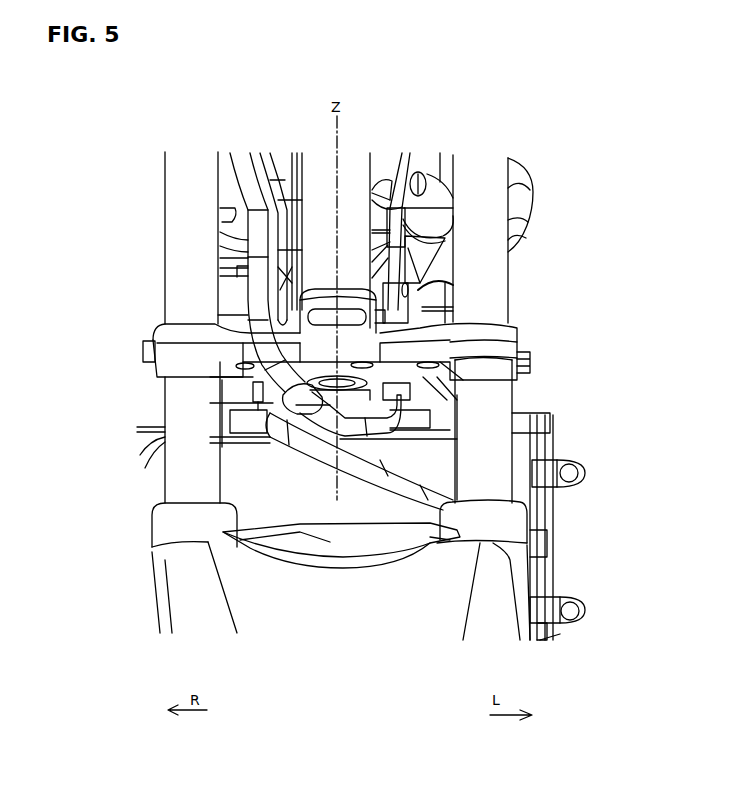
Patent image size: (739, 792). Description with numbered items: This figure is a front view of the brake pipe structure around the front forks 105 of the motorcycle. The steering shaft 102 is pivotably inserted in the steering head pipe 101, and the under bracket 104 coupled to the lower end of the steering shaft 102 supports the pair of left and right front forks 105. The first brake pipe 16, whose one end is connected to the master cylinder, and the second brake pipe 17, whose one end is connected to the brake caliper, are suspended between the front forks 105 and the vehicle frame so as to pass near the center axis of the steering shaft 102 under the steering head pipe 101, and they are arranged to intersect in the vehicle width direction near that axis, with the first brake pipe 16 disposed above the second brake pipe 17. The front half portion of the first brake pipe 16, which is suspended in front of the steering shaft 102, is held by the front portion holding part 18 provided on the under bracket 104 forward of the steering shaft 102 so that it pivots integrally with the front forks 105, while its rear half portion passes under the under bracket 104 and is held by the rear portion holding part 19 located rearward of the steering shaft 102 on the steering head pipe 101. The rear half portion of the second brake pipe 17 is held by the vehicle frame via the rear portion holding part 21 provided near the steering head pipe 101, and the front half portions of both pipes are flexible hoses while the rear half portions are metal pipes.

The first brake pipe 16 is at (213, 283).
The second brake pipe 17 is at (250, 412).
The front portion holding part 18 is at (290, 412).
The rear portion holding part 19 is at (478, 390).
The rear portion holding part 21 is at (260, 397).
The steering head pipe 101 is at (342, 193).
The steering shaft 102 is at (310, 410).
The under bracket 104 is at (513, 323).
The front forks 105 is at (187, 200).